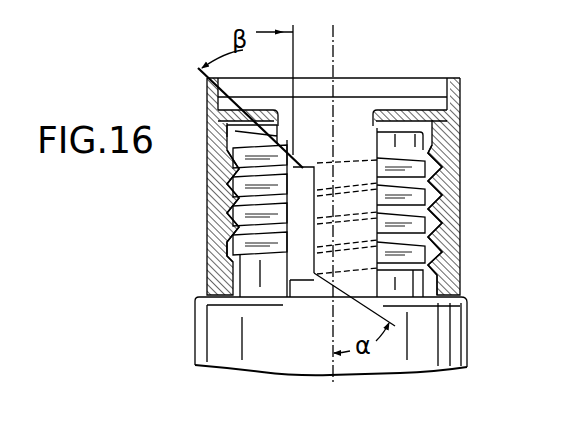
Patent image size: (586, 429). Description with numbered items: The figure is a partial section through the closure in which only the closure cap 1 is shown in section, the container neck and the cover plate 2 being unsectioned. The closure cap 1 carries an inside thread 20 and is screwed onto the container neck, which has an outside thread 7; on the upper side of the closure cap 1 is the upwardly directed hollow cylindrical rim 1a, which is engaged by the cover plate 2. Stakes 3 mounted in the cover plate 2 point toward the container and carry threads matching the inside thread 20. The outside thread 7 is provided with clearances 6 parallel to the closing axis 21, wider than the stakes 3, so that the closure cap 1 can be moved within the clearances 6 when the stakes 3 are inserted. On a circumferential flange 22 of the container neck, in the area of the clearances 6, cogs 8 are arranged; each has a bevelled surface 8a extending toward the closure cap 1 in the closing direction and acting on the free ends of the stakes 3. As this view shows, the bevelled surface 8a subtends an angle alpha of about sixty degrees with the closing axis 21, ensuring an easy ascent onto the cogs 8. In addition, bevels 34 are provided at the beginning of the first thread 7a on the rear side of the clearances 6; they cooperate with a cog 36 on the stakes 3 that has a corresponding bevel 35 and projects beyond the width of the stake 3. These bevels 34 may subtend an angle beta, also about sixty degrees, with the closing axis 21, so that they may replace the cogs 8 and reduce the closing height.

The closure cap 1 is at (339, 166).
The hollow cylindrical rim 1a is at (462, 81).
The cover plate 2 is at (405, 106).
The stake 3 is at (360, 217).
The clearance 6 is at (303, 183).
The outside thread 7 is at (446, 200).
The first thread 7a is at (226, 163).
The cog 8 is at (296, 280).
The bevelled surface 8a is at (322, 288).
The inside thread 20 is at (437, 240).
The closing axis 21 is at (333, 52).
The circumferential flange 22 is at (467, 307).
The bevel 34 is at (243, 137).
The bevel 35 is at (293, 145).
The cog 36 is at (225, 183).